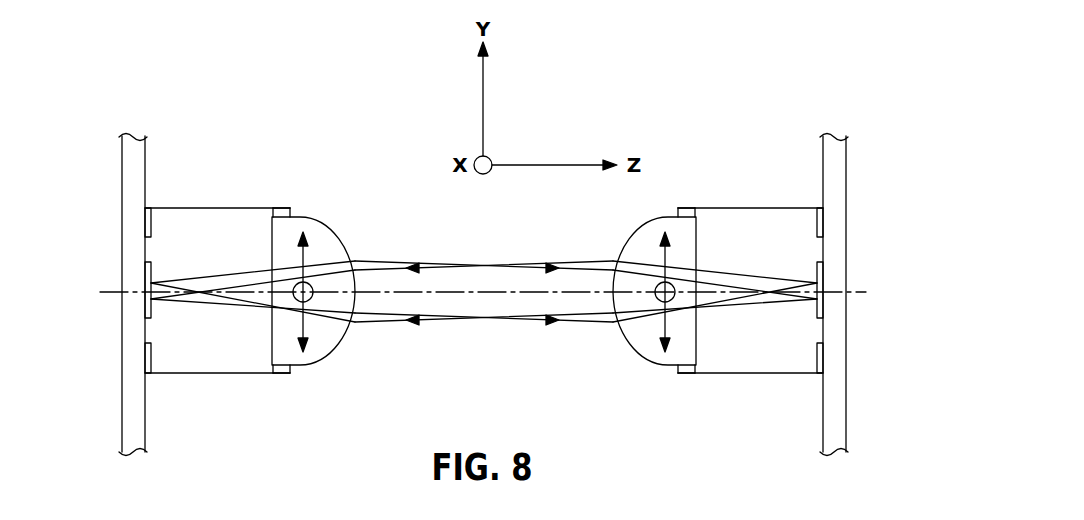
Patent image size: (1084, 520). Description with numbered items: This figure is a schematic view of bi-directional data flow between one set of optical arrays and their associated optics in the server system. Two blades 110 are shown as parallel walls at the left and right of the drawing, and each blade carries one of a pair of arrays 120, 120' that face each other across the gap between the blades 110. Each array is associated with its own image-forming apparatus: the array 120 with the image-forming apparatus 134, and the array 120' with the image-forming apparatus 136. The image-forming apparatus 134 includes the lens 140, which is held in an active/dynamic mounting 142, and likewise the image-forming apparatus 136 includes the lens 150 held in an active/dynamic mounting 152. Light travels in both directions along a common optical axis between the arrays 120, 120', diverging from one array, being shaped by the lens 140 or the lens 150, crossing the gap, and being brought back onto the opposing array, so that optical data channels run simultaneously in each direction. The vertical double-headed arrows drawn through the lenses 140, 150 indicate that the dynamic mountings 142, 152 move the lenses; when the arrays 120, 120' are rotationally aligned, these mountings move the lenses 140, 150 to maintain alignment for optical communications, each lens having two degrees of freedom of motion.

The blade 110 is at (122, 163).
The array 120 is at (96, 290).
The array 120' is at (872, 290).
The image-forming apparatus 134 is at (291, 264).
The image-forming apparatus 136 is at (674, 265).
The lens 140 is at (325, 340).
The active/dynamic mounting 142 is at (284, 373).
The lens 150 is at (637, 340).
The active/dynamic mounting 152 is at (682, 373).